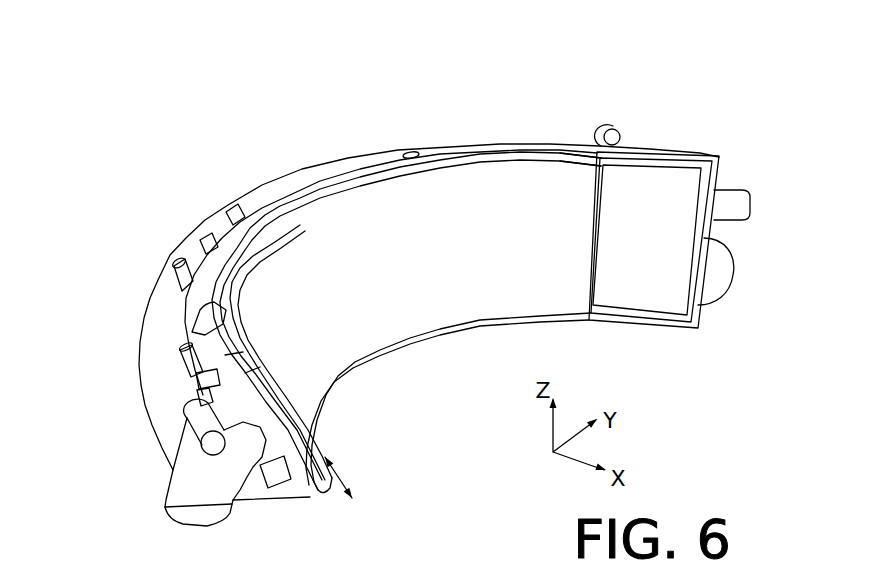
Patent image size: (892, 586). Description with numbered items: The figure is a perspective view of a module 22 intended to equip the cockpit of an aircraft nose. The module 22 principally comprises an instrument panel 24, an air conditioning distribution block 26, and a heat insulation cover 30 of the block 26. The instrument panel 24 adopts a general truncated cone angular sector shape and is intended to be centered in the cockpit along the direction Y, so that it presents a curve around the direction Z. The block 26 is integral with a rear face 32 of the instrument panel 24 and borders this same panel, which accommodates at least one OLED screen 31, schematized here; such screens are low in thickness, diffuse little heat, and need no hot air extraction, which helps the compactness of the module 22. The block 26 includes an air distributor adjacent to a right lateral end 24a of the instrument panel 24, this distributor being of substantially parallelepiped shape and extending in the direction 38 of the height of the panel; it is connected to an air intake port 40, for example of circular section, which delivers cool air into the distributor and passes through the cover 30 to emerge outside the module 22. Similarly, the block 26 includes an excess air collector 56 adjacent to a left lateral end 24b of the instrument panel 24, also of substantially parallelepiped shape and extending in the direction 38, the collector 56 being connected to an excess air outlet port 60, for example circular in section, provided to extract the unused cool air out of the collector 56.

The module 22 is at (458, 137).
The instrument panel 24 is at (304, 220).
The right lateral end 24a is at (648, 150).
The left lateral end 24b is at (205, 352).
The air conditioning distribution block 26 is at (207, 275).
The heat insulation cover 30 is at (160, 283).
The OLED screen 31 is at (668, 165).
The rear face 32 is at (300, 490).
The direction of the height of the panel 38 is at (343, 477).
The air intake port 40 is at (720, 276).
The excess air collector 56 is at (206, 388).
The excess air outlet port 60 is at (182, 510).